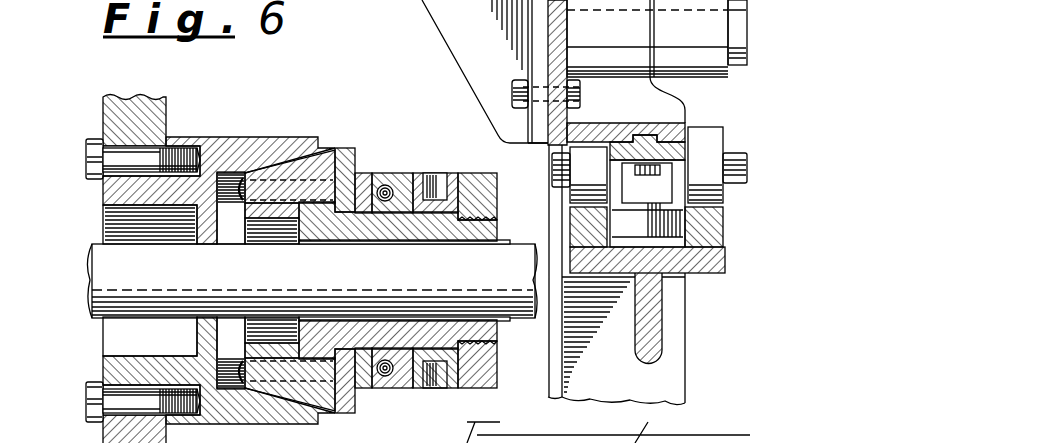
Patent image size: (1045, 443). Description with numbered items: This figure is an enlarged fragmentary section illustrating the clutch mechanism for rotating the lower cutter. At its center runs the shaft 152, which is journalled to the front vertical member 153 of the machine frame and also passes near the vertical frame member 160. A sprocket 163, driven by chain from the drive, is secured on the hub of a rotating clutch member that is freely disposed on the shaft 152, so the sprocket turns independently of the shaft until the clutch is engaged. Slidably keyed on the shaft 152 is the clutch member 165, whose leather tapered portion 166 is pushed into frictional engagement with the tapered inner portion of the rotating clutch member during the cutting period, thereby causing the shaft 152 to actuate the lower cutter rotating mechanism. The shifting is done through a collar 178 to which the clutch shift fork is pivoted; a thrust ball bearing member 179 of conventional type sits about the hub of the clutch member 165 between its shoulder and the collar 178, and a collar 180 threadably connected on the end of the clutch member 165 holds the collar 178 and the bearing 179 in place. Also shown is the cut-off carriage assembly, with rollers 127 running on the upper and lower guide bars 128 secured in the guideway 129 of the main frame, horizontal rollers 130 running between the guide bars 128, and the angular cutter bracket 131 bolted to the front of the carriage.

The rollers 127 is at (585, 152).
The guide bars 128 is at (590, 222).
The guideway 129 is at (712, 258).
The horizontal rollers 130 is at (704, 210).
The angular cutter bracket 131 is at (431, 17).
The shaft 152 is at (100, 252).
The front vertical member 153 is at (673, 352).
The vertical frame member 160 is at (262, 125).
The sprocket 163 is at (103, 432).
The clutch member 165 is at (342, 216).
The leather tapered portion 166 is at (331, 148).
The collar 178 is at (455, 173).
The thrust ball bearing member 179 is at (405, 387).
The collar 180 is at (480, 386).